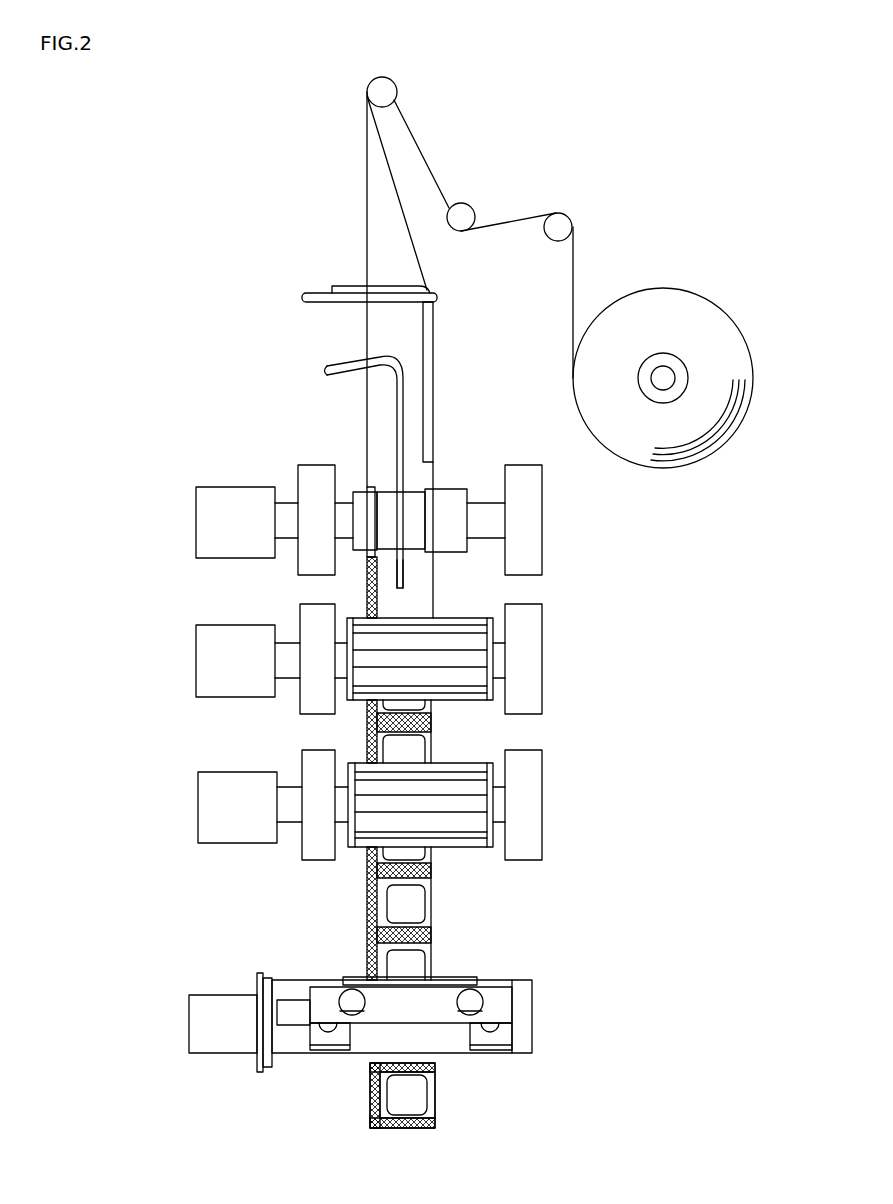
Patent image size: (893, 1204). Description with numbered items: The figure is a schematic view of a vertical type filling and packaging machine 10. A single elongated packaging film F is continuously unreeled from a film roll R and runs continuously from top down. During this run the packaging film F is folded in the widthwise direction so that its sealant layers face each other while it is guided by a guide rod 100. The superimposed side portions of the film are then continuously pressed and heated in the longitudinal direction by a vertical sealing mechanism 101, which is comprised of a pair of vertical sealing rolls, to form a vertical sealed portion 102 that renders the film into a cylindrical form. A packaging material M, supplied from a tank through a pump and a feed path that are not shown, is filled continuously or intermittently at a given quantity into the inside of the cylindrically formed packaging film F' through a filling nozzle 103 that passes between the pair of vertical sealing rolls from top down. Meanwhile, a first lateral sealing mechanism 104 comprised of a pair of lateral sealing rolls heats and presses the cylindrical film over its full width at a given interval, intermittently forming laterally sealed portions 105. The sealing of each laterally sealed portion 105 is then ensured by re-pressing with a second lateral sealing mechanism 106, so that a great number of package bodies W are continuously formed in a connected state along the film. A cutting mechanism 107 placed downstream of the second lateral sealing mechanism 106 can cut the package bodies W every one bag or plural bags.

The filling and packaging machine 10 is at (590, 137).
The packaging film F is at (429, 289).
The film roll R is at (692, 290).
The guide rod 100 is at (461, 336).
The filling nozzle 103 is at (431, 385).
The vertical sealing mechanism 101 is at (565, 534).
The vertical sealed portion 102 is at (367, 590).
The cylindrically formed packaging film F' is at (492, 580).
The first lateral sealing mechanism 104 is at (563, 653).
The packaging material M is at (428, 706).
The laterally sealed portion 105 is at (433, 873).
The second lateral sealing mechanism 106 is at (563, 801).
The cutting mechanism 107 is at (553, 1017).
The package body W is at (355, 965).